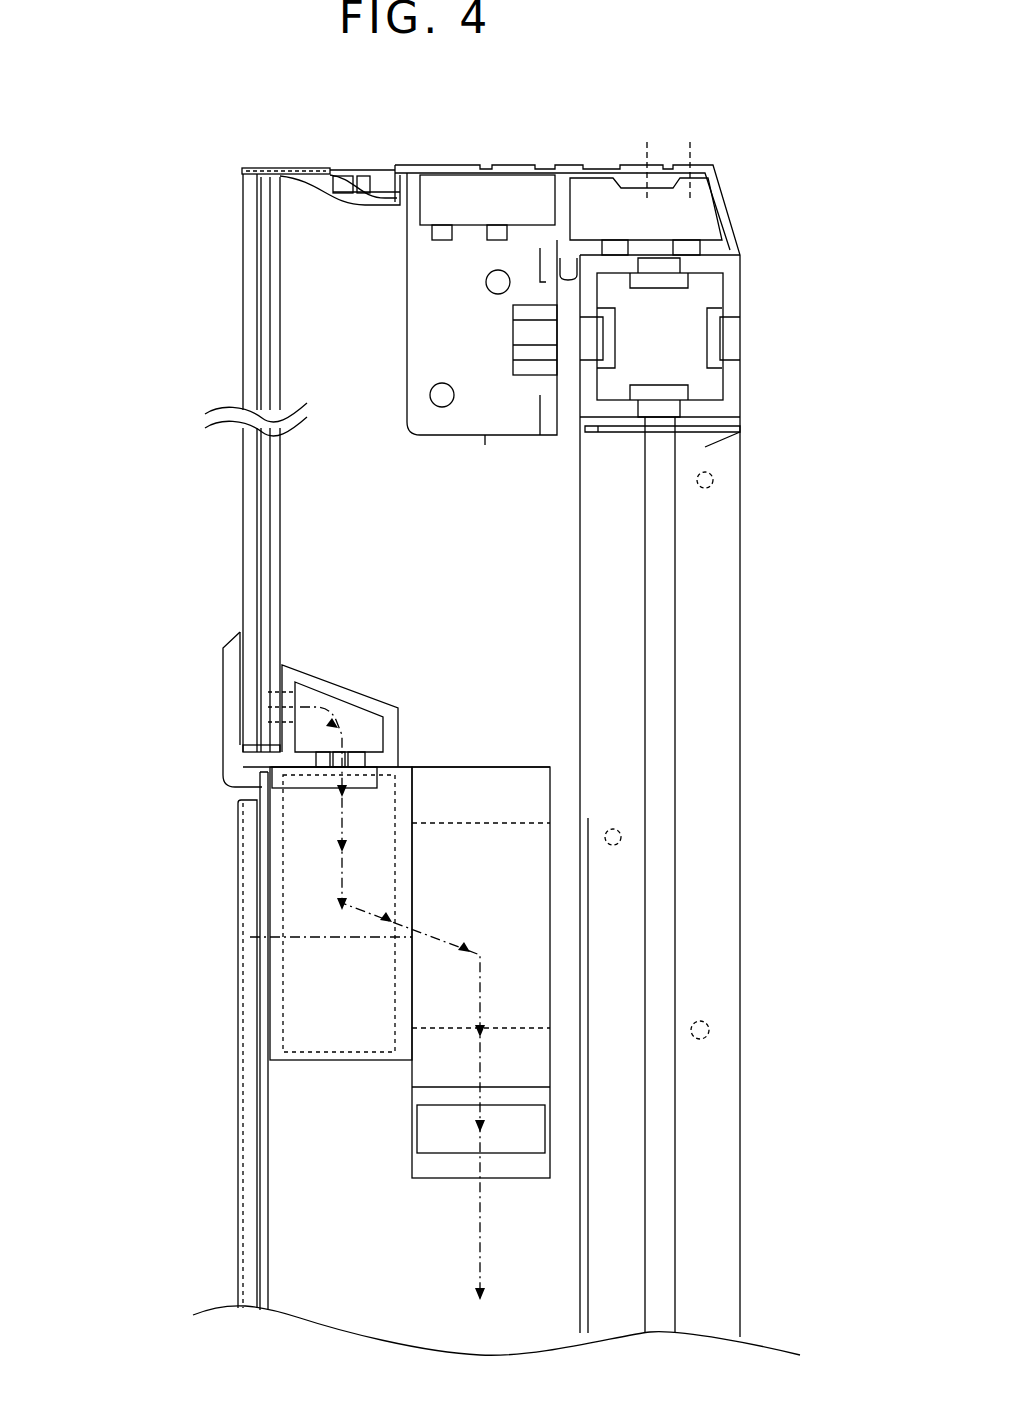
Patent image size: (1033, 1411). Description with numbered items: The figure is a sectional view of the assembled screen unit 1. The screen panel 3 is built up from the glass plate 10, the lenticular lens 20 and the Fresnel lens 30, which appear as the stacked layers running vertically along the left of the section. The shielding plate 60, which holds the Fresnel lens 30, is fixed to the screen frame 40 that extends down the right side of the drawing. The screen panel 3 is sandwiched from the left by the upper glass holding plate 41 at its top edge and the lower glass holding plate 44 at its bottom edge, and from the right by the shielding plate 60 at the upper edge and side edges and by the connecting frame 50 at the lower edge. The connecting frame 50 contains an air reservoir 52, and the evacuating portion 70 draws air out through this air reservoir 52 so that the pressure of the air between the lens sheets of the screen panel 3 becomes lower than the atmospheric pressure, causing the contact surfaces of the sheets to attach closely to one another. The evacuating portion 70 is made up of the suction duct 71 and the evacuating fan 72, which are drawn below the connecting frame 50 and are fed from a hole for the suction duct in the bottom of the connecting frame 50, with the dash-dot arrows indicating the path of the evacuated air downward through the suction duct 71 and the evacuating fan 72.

The screen unit 1 is at (237, 510).
The screen panel 3 is at (163, 200).
The glass plate 10 is at (252, 243).
The lenticular lens 20 is at (262, 295).
The Fresnel lens 30 is at (272, 345).
The screen frame 40 is at (437, 167).
The upper glass holding plate 41 is at (243, 172).
The lower glass holding plate 44 is at (225, 708).
The connecting frame 50 is at (340, 690).
The air reservoir 52 is at (313, 738).
The shielding plate 60 is at (310, 185).
The evacuating portion 70 is at (113, 905).
The suction duct 71 is at (315, 900).
The evacuating fan 72 is at (450, 1080).